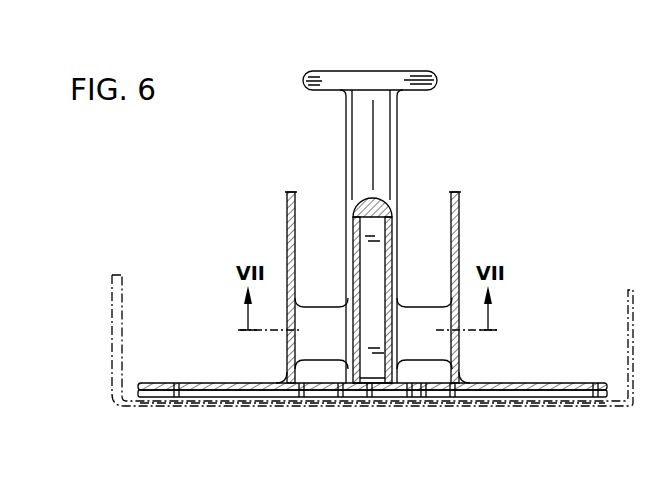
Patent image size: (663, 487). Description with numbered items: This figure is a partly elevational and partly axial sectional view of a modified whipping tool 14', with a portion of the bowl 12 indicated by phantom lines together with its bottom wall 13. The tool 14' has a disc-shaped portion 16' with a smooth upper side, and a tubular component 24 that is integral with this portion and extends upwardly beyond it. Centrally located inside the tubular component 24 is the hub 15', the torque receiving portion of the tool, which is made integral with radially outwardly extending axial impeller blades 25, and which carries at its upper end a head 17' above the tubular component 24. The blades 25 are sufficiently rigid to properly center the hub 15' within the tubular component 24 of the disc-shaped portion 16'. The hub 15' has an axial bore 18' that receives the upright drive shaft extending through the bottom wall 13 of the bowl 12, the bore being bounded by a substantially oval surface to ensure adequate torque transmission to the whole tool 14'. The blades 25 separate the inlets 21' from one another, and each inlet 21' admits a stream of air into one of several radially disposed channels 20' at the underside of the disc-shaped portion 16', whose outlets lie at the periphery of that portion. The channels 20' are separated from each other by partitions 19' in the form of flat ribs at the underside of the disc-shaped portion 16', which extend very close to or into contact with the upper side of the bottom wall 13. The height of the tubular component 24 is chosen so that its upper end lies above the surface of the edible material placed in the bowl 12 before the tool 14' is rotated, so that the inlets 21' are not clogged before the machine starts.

The bowl 12 is at (112, 326).
The bottom wall 13 is at (210, 404).
The whipping tool 14' is at (557, 283).
The hub 15' is at (441, 286).
The disc-shaped portion 16' is at (372, 358).
The knob / head 17' is at (395, 201).
The axial bore 18' is at (365, 405).
The partitions 19' is at (391, 423).
The channels 20' is at (372, 426).
The inlets 21' is at (377, 216).
The tubular component 24 is at (289, 236).
The impeller blades 25 is at (416, 326).